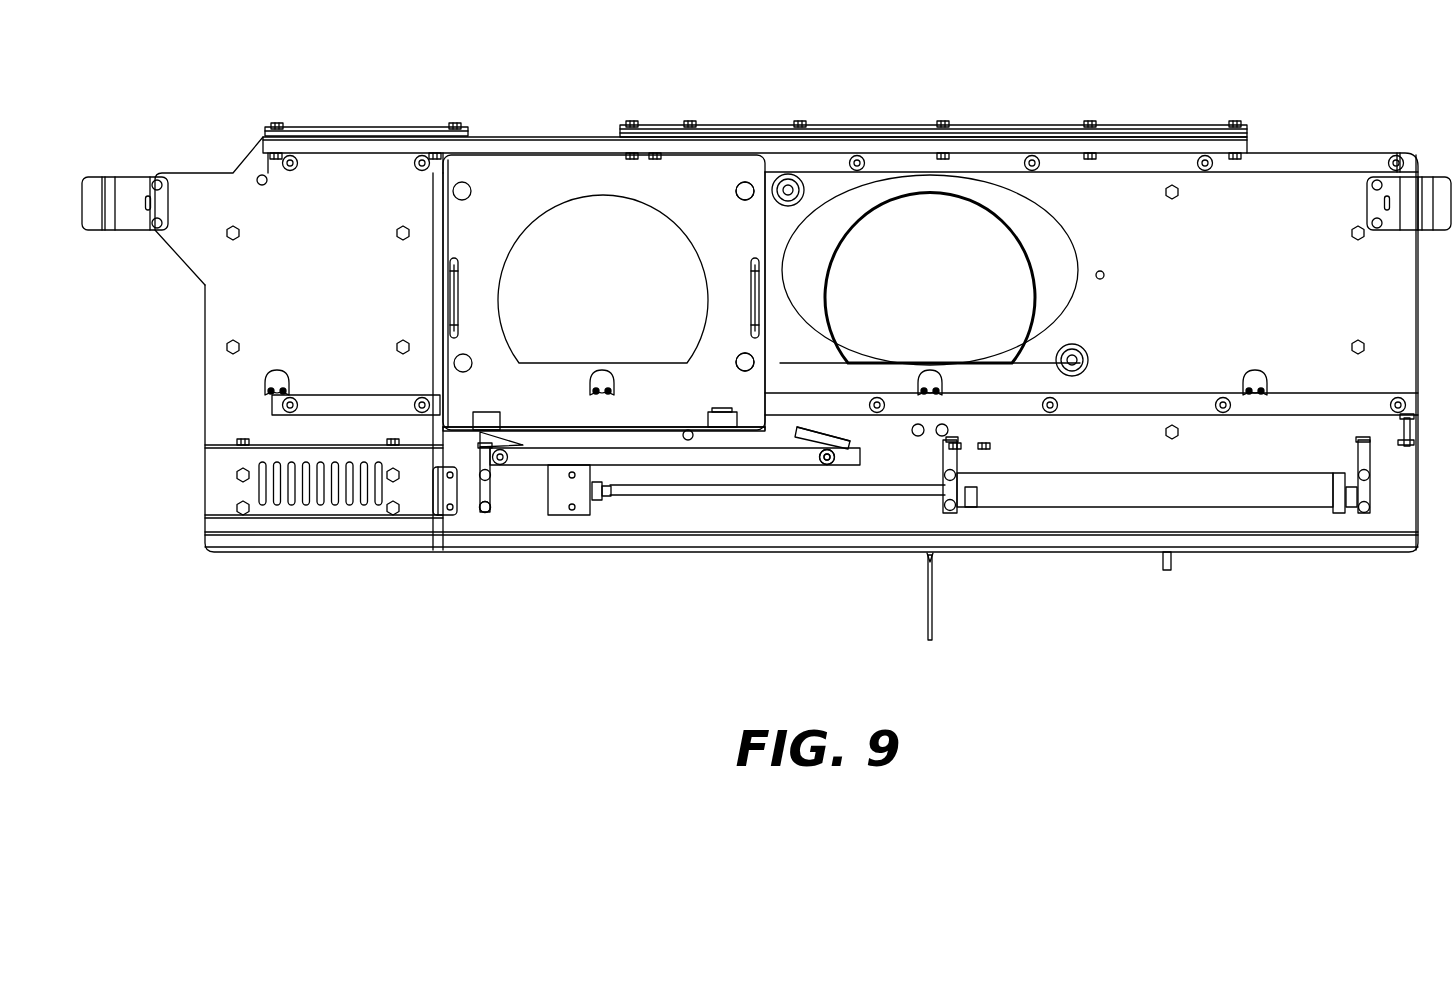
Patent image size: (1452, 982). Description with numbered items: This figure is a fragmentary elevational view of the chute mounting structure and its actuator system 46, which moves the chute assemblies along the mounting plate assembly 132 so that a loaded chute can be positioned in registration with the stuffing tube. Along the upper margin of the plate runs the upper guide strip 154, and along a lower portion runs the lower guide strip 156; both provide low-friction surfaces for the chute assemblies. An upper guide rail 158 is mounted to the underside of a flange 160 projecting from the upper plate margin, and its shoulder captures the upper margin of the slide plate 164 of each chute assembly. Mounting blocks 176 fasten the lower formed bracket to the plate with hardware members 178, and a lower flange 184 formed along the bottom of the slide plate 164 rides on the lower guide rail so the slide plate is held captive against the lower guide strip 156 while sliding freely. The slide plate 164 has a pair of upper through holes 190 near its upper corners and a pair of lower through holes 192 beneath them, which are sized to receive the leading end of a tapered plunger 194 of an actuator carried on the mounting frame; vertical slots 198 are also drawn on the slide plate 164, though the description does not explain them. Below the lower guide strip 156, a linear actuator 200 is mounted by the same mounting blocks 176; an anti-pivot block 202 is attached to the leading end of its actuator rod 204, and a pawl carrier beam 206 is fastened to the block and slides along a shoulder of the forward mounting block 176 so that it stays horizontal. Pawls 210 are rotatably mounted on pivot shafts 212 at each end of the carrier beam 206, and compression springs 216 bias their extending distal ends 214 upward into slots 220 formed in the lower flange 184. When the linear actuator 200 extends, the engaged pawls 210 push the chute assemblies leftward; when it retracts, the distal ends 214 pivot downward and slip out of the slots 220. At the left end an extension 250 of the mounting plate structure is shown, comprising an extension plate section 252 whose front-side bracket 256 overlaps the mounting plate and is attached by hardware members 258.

The actuator system 46 is at (930, 517).
The mounting plate assembly 132 is at (545, 560).
The upper guide strip 154 is at (515, 140).
The lower guide strip 156 is at (907, 407).
The upper guide rail 158 is at (718, 138).
The flange 160 is at (995, 137).
The slide plate 164 is at (552, 192).
The mounting block 176 is at (501, 464).
The hardware member 178 is at (486, 514).
The lower flange 184 is at (646, 424).
The upper through hole 190 is at (744, 182).
The lower through hole 192 is at (746, 352).
The tapered plunger 194 is at (802, 175).
The slot 198 is at (462, 290).
The linear actuator 200 is at (1212, 492).
The anti-pivot block 202 is at (585, 503).
The actuator rod 204 is at (840, 495).
The pawl carrier beam 206 is at (628, 460).
The pawl 210 is at (500, 436).
The pivot shaft 212 is at (822, 463).
The extending distal end 214 is at (472, 434).
The compression spring 216 is at (478, 470).
The slot 220 is at (723, 430).
The extension 250 is at (378, 120).
The extension plate section 252 is at (338, 217).
The bracket 256 is at (438, 498).
The hardware member 258 is at (449, 512).